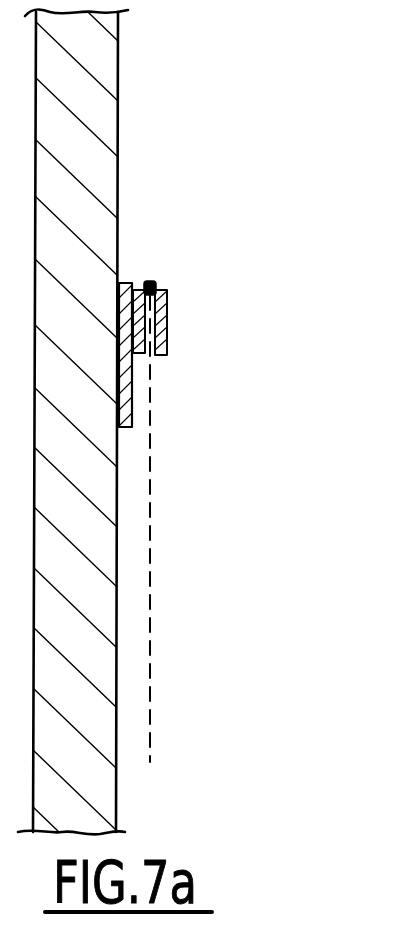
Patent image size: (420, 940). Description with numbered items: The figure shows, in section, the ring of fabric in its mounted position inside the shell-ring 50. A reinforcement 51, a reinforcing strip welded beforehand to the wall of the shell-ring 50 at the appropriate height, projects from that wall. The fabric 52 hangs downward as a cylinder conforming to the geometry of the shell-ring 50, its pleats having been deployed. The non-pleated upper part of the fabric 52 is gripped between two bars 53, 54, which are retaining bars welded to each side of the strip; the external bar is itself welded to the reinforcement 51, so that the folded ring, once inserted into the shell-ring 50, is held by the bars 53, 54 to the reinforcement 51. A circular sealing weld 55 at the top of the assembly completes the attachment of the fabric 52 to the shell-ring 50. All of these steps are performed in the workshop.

The shell-ring 50 is at (103, 122).
The reinforcement 51 is at (125, 283).
The fabric 52 is at (152, 432).
The bar 53 is at (141, 289).
The bar 54 is at (167, 313).
The circular sealing weld 55 is at (153, 283).